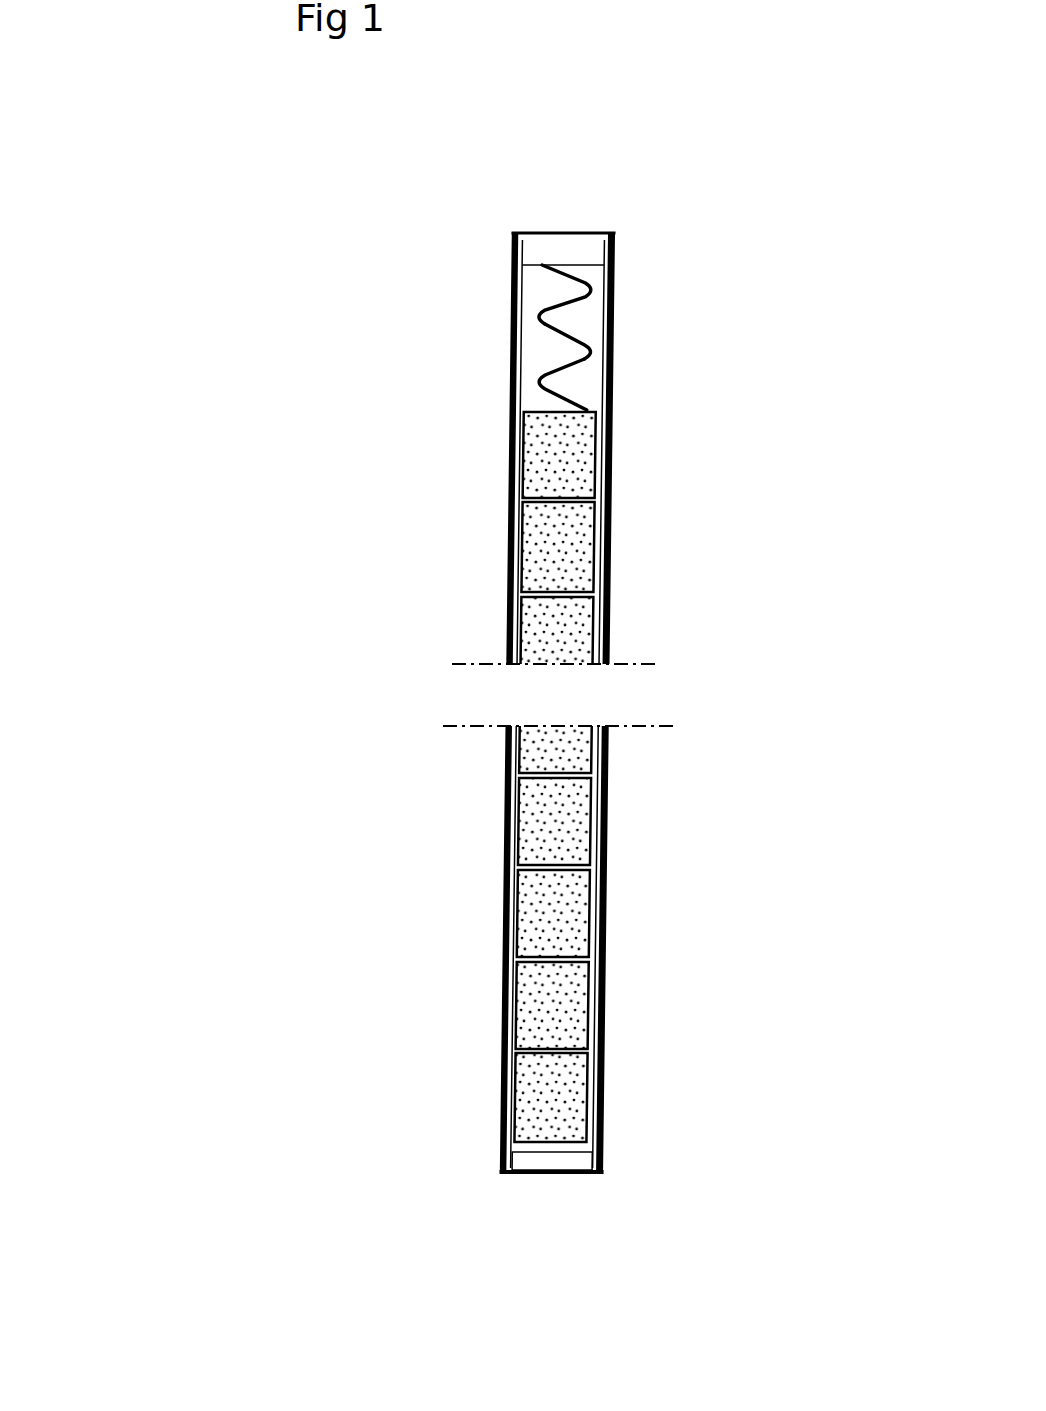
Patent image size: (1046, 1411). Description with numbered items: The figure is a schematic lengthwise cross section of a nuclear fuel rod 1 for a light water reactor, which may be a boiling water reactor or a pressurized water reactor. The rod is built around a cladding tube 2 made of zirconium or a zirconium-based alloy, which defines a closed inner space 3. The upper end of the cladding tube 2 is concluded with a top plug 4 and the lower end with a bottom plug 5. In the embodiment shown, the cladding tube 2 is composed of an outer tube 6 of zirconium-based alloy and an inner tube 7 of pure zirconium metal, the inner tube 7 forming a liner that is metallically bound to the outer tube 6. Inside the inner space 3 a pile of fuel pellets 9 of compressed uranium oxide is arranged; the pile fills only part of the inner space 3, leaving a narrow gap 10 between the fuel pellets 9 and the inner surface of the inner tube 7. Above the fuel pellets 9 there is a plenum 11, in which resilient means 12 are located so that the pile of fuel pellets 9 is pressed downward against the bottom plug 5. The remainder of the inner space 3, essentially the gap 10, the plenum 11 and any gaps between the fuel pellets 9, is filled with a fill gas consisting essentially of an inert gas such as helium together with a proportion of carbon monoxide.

The nuclear fuel rod 1 is at (452, 230).
The cladding tube 2 is at (507, 610).
The inner space 3 is at (575, 387).
The top plug 4 is at (575, 247).
The bottom plug 5 is at (550, 1162).
The outer tube 6 is at (613, 538).
The inner tube 7 is at (603, 615).
The fuel pellets 9 is at (555, 820).
The gap 10 is at (523, 525).
The plenum 11 is at (543, 347).
The resilient means 12 is at (545, 300).